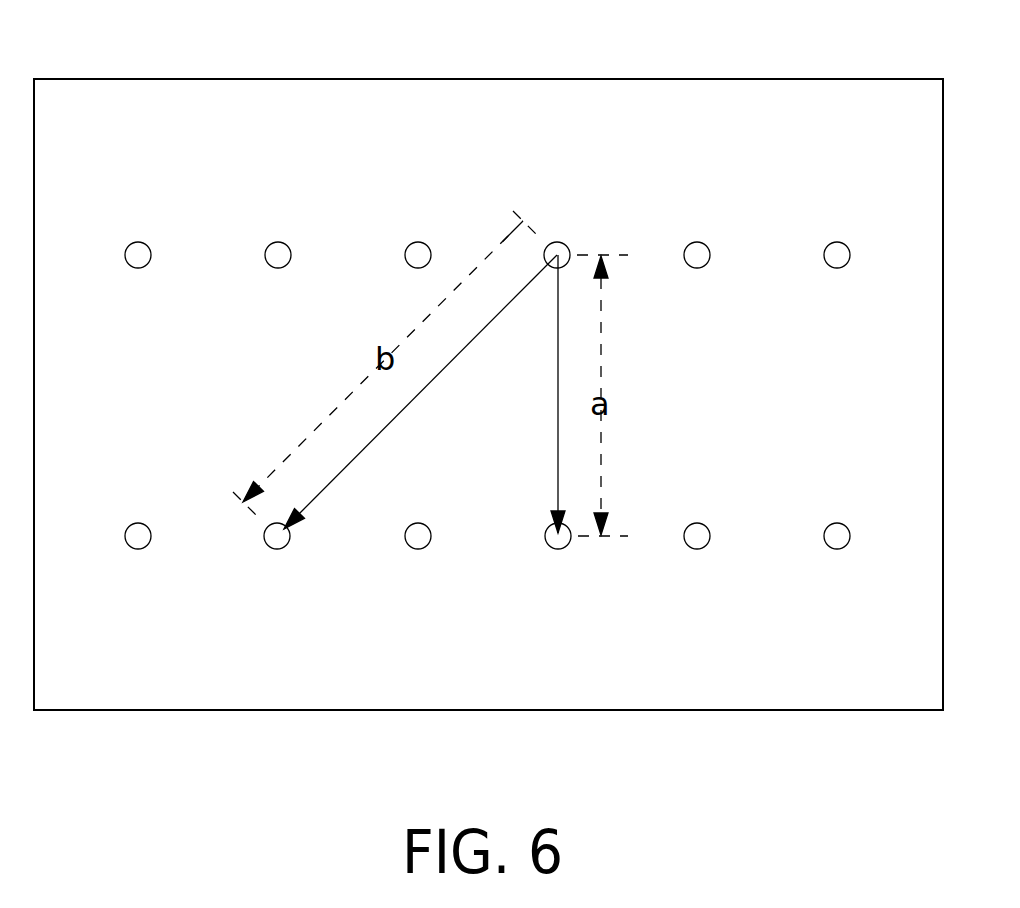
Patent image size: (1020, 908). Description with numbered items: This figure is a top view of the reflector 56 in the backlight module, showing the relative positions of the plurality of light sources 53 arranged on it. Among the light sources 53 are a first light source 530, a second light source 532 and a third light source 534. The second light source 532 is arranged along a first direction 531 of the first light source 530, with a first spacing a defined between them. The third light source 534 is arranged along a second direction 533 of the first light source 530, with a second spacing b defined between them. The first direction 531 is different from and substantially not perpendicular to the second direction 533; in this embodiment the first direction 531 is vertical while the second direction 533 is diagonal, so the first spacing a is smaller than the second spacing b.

The reflector 56 is at (662, 79).
The light sources 53 is at (264, 221).
The first light source 530 is at (553, 243).
The first direction 531 is at (558, 373).
The second light source 532 is at (558, 550).
The second direction 533 is at (407, 403).
The third light source 534 is at (278, 551).